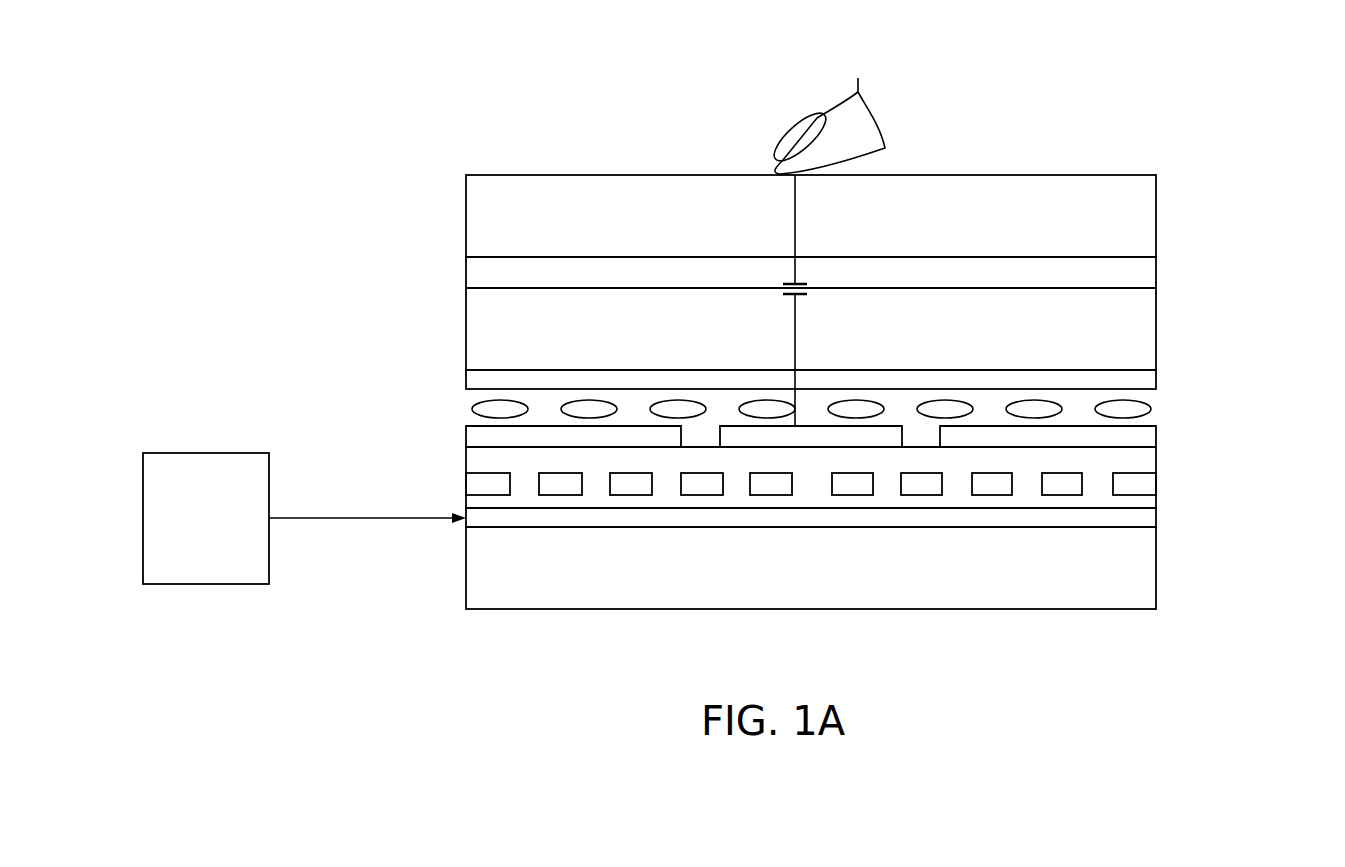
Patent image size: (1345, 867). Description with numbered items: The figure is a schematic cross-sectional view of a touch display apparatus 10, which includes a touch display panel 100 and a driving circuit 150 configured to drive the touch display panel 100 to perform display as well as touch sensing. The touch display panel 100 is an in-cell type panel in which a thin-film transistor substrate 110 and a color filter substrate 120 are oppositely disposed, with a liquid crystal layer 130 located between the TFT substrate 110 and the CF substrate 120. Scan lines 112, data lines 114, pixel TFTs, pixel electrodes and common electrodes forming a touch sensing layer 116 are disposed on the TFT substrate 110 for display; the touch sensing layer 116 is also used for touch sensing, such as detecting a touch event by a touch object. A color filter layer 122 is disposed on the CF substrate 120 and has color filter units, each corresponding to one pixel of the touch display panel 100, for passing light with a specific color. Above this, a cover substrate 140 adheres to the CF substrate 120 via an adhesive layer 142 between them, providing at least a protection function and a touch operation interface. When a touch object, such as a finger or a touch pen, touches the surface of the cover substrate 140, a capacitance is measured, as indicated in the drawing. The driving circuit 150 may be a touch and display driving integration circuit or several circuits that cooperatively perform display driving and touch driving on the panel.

The touch display apparatus 10 is at (508, 86).
The touch display panel 100 is at (1237, 172).
The thin-film transistor substrate 110 is at (1148, 575).
The scan lines 112 is at (1148, 523).
The data lines 114 is at (1148, 485).
The touch sensing layer 116 is at (1148, 440).
The color filter substrate 120 is at (476, 320).
The color filter layer 122 is at (482, 379).
The liquid crystal layer 130 is at (452, 408).
The cover substrate 140 is at (476, 221).
The adhesive layer 142 is at (476, 272).
The driving circuit 150 is at (207, 585).